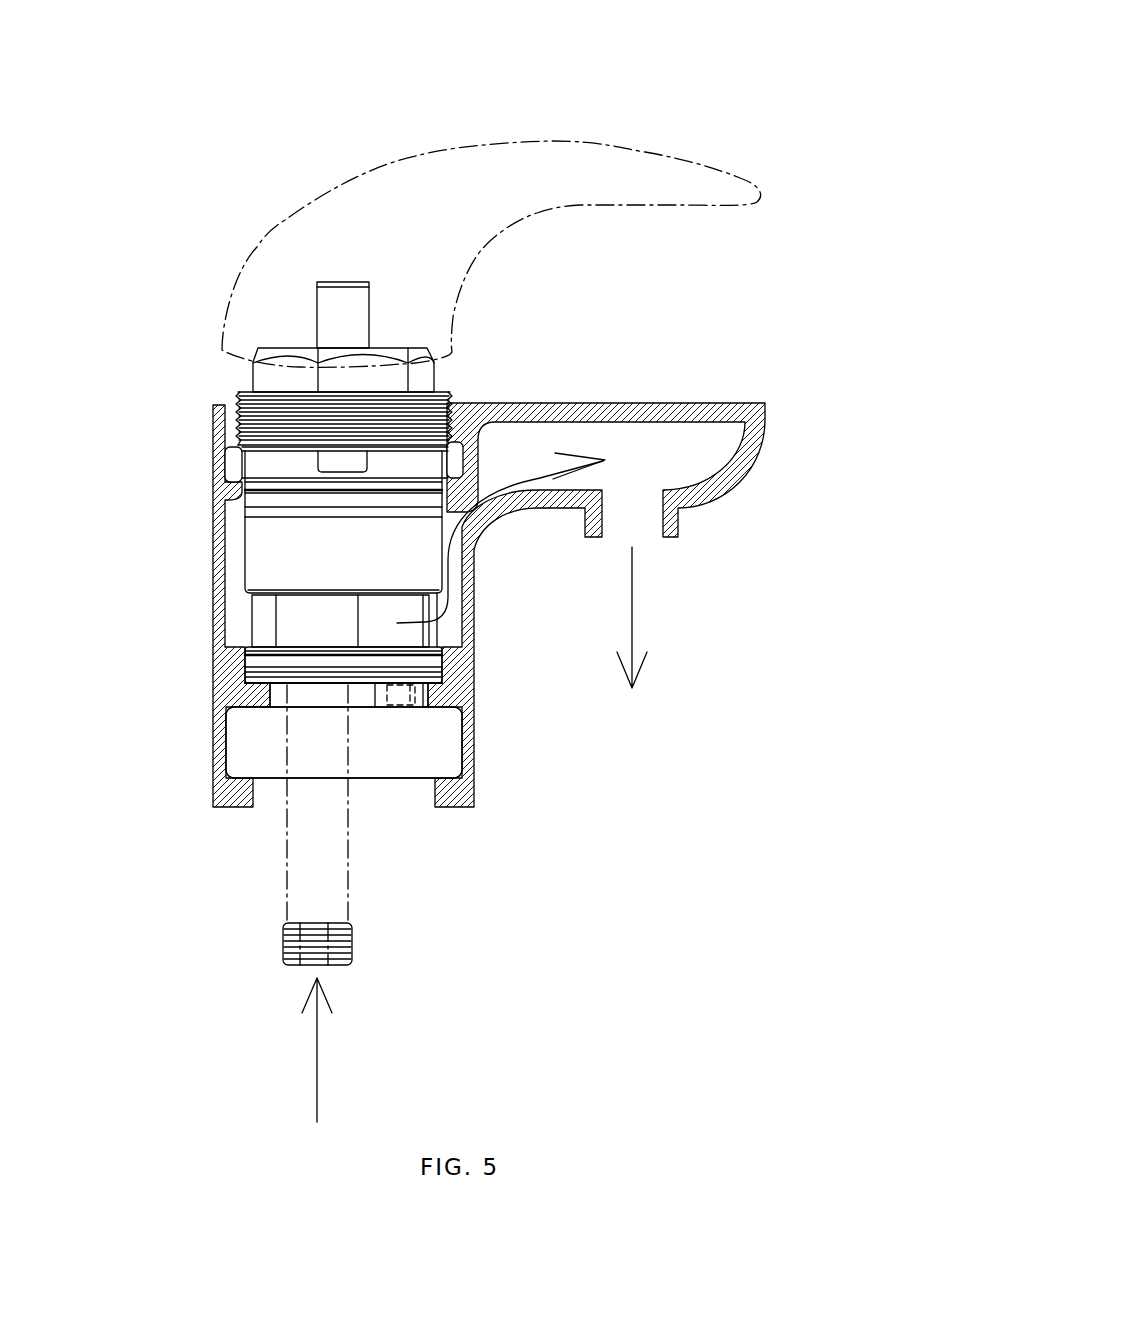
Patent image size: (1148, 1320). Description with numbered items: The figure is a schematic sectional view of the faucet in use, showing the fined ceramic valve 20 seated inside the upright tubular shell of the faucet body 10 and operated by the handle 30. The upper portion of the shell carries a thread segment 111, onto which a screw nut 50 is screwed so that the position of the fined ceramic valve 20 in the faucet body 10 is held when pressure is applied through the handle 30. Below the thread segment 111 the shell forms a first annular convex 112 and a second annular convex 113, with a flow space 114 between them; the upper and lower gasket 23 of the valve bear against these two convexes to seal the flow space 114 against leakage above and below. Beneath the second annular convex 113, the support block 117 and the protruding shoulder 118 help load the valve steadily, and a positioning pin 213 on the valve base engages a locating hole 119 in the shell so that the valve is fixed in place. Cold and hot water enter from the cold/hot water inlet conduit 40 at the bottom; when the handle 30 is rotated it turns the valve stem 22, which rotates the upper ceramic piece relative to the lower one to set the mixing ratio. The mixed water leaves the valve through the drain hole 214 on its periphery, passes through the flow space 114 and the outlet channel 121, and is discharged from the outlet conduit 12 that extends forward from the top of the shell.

The faucet body 10 is at (540, 580).
The outlet conduit 12 is at (670, 403).
The outlet channel 121 is at (697, 453).
The fined ceramic valve 20 is at (352, 620).
The valve stem 22 is at (332, 295).
The gasket 23 is at (237, 497).
The handle 30 is at (557, 166).
The cold/hot water inlet conduit 40 is at (303, 878).
The screw nut 50 is at (284, 376).
The thread segment 111 is at (238, 410).
The first annular convex 112 is at (233, 482).
The second annular convex 113 is at (240, 660).
The flow space 114 is at (237, 583).
The support block 117 is at (255, 707).
The protruding shoulder 118 is at (360, 700).
The locating hole 119 is at (510, 708).
The positioning pin 213 is at (415, 693).
The drain hole 214 is at (413, 637).